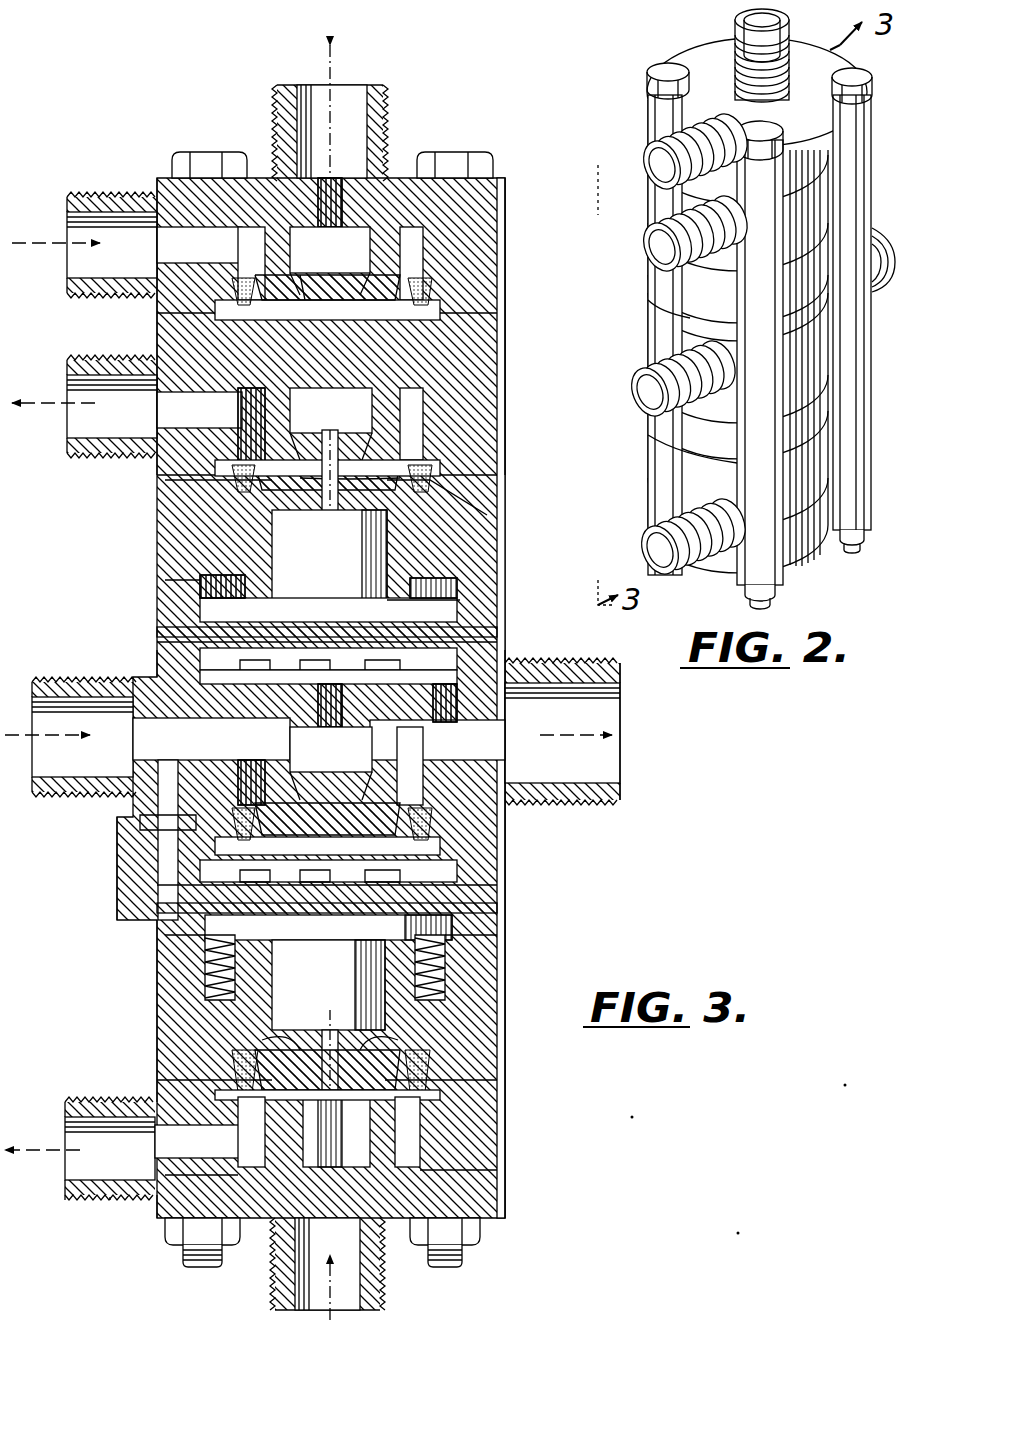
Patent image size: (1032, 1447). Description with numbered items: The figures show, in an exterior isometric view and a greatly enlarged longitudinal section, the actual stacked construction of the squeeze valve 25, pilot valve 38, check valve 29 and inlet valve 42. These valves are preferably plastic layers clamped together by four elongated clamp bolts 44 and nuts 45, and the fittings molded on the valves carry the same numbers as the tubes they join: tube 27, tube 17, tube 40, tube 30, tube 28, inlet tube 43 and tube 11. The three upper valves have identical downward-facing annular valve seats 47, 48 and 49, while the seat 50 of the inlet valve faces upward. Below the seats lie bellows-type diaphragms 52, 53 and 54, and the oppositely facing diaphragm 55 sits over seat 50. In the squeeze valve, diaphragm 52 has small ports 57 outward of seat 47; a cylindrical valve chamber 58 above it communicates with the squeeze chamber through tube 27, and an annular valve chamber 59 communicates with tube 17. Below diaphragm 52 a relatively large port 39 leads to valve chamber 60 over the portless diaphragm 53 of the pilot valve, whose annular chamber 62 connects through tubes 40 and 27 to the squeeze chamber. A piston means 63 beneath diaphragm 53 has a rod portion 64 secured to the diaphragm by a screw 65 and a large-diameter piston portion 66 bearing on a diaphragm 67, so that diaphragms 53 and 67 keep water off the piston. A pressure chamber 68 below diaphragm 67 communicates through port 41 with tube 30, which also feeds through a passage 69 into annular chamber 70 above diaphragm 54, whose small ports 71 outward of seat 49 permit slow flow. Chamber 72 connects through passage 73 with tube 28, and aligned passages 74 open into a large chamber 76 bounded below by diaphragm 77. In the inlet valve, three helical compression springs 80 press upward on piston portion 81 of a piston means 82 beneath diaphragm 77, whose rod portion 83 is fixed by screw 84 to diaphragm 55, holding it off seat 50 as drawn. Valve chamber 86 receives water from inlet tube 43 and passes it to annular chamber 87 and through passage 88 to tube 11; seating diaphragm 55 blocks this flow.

In FIG. 3, the tube 11 is at (105, 1200).
In FIG. 2, the tube 11 is at (643, 545).
In FIG. 3, the tube 17 is at (96, 192).
In FIG. 2, the tube 17 is at (648, 160).
In FIG. 3, the squeeze valve 25 is at (522, 228).
In FIG. 2, the squeeze valve 25 is at (830, 150).
In FIG. 3, the tube 27 is at (380, 112).
In FIG. 2, the tube 27 is at (735, 46).
In FIG. 3, the tube 28 is at (82, 677).
In FIG. 2, the tube 28 is at (632, 386).
In FIG. 3, the check valve 29 is at (535, 852).
In FIG. 2, the check valve 29 is at (835, 338).
In FIG. 3, the tube 30 is at (565, 805).
In FIG. 2, the tube 30 is at (875, 245).
In FIG. 3, the pilot valve 38 is at (516, 473).
In FIG. 2, the pilot valve 38 is at (820, 300).
In FIG. 3, the port 39 is at (345, 320).
In FIG. 3, the tube 40 is at (102, 458).
In FIG. 2, the tube 40 is at (650, 248).
In FIG. 3, the port 41 is at (433, 700).
In FIG. 3, the inlet valve 42 is at (517, 1080).
In FIG. 2, the inlet valve 42 is at (830, 470).
In FIG. 3, the inlet tube 43 is at (275, 1295).
In FIG. 3, the clamp bolts 44 is at (210, 160).
In FIG. 2, the clamp bolts 44 is at (748, 26).
In FIG. 3, the nuts 45 is at (168, 1235).
In FIG. 2, the nuts 45 is at (778, 598).
In FIG. 3, the annular valve seat 47 is at (345, 300).
In FIG. 3, the annular valve seat 48 is at (300, 470).
In FIG. 3, the annular valve seat 49 is at (300, 812).
In FIG. 3, the valve seat 50 is at (365, 1075).
In FIG. 3, the diaphragm 52 is at (330, 290).
In FIG. 3, the diaphragm 53 is at (322, 515).
In FIG. 3, the diaphragm 54 is at (320, 790).
In FIG. 3, the diaphragm 55 is at (262, 1048).
In FIG. 3, the ports 57 is at (242, 308).
In FIG. 3, the cylindrical valve chamber 58 is at (352, 235).
In FIG. 3, the annular valve chamber 59 is at (415, 268).
In FIG. 3, the valve chamber 60 is at (345, 420).
In FIG. 3, the annular chamber 62 is at (240, 420).
In FIG. 3, the piston means 63 is at (395, 555).
In FIG. 3, the rod portion 64 is at (272, 553).
In FIG. 3, the screw 65 is at (352, 472).
In FIG. 3, the piston portion 66 is at (325, 610).
In FIG. 3, the diaphragm 67 is at (497, 636).
In FIG. 2, the diaphragm 67 is at (655, 298).
In FIG. 3, the pressure chamber 68 is at (375, 672).
In FIG. 3, the passage 69 is at (415, 760).
In FIG. 3, the annular chamber 70 is at (252, 775).
In FIG. 3, the ports 71 is at (248, 842).
In FIG. 3, the chamber 72 is at (332, 727).
In FIG. 3, the passage 73 is at (212, 718).
In FIG. 3, the aligned passages 74 is at (160, 848).
In FIG. 3, the chamber 76 is at (395, 895).
In FIG. 3, the diaphragm 77 is at (497, 910).
In FIG. 2, the diaphragm 77 is at (690, 444).
In FIG. 3, the helical compression springs 80 is at (210, 960).
In FIG. 3, the piston portion 81 is at (285, 932).
In FIG. 3, the piston means 82 is at (270, 1005).
In FIG. 3, the rod portion 83 is at (385, 1005).
In FIG. 3, the screw 84 is at (345, 1100).
In FIG. 3, the valve chamber 86 is at (355, 1170).
In FIG. 3, the annular chamber 87 is at (245, 1165).
In FIG. 3, the passage 88 is at (160, 1157).